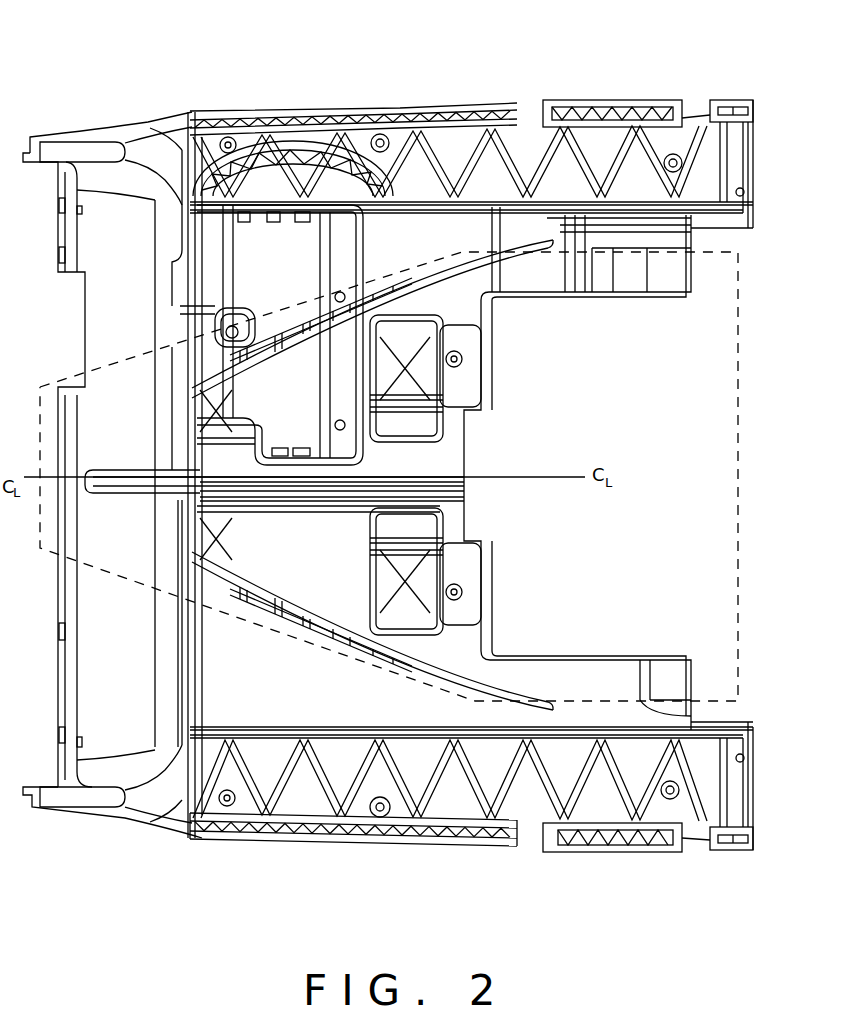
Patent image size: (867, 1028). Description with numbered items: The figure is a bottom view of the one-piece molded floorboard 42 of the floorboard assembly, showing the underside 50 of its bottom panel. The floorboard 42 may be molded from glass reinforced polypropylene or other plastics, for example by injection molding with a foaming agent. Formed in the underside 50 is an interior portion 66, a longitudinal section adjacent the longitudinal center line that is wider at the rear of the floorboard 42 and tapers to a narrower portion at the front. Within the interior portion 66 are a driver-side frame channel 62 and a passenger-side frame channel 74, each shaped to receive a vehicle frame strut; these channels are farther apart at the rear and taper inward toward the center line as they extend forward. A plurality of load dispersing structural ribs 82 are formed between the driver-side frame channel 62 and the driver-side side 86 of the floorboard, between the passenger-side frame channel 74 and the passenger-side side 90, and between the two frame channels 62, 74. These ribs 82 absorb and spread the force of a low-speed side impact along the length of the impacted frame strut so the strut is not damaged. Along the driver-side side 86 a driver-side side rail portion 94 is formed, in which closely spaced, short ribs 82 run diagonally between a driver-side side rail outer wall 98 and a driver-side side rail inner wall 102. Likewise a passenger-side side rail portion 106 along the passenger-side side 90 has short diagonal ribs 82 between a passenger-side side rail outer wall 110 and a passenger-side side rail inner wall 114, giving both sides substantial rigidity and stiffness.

The one-piece molded floorboard 42 is at (82, 98).
The underside 50 is at (430, 575).
The driver-side frame channel 62 is at (483, 305).
The interior portion 66 is at (738, 328).
The passenger-side frame channel 74 is at (430, 604).
The load dispersing structural ribs 82 is at (248, 128).
The driver-side side 86 is at (277, 112).
The passenger-side side 90 is at (395, 842).
The driver-side side rail portion 94 is at (490, 110).
The driver-side side rail outer wall 98 is at (203, 135).
The driver-side side rail inner wall 102 is at (208, 132).
The passenger-side side rail portion 106 is at (415, 845).
The passenger-side side rail outer wall 110 is at (210, 832).
The passenger-side side rail inner wall 114 is at (190, 832).